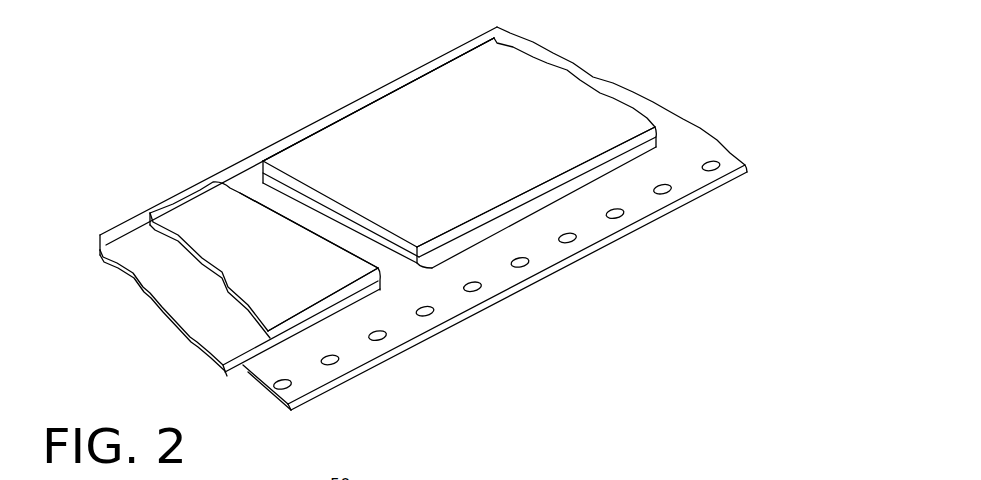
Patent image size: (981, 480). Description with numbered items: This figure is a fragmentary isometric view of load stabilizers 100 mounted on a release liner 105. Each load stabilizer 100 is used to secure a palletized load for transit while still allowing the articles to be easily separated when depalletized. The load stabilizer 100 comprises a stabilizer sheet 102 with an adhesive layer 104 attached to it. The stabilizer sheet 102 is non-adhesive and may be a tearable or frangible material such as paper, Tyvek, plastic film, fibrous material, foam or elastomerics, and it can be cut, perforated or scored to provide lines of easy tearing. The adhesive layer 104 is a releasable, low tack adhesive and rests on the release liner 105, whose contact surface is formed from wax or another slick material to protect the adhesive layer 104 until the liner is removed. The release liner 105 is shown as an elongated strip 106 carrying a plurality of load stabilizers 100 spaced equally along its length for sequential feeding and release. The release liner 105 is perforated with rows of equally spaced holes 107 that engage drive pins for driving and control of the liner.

The load stabilizer 100 is at (405, 110).
The stabilizer sheet 102 is at (535, 113).
The adhesive layer 104 is at (557, 198).
The release liner 105 is at (458, 277).
The elongated strip 106 is at (745, 58).
The holes 107 is at (713, 162).